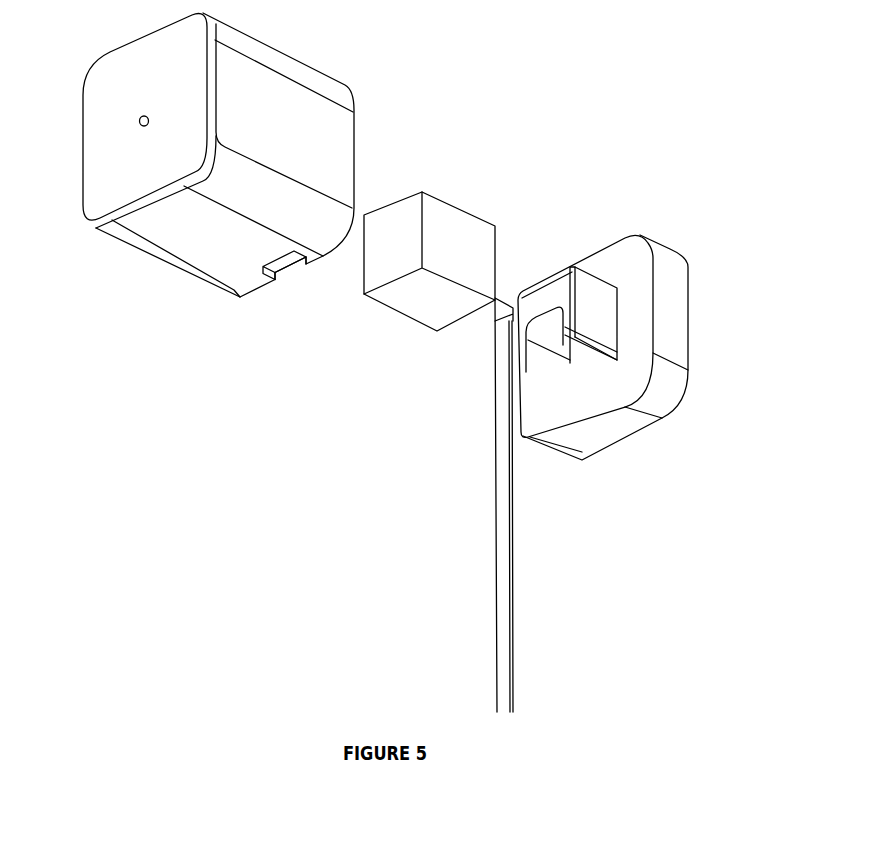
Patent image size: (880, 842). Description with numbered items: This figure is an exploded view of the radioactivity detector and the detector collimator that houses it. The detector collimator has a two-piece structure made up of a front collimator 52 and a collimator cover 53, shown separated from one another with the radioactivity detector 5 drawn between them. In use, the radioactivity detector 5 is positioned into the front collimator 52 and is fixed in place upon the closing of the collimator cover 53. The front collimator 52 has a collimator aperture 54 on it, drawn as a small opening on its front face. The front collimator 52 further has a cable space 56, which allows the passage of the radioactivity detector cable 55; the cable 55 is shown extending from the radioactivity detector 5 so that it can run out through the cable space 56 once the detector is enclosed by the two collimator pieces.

The radioactivity detector 5 is at (448, 206).
The front collimator 52 is at (144, 245).
The collimator cover 53 is at (687, 338).
The collimator aperture 54 is at (133, 121).
The radioactivity detector cable 55 is at (507, 605).
The cable space 56 is at (280, 273).